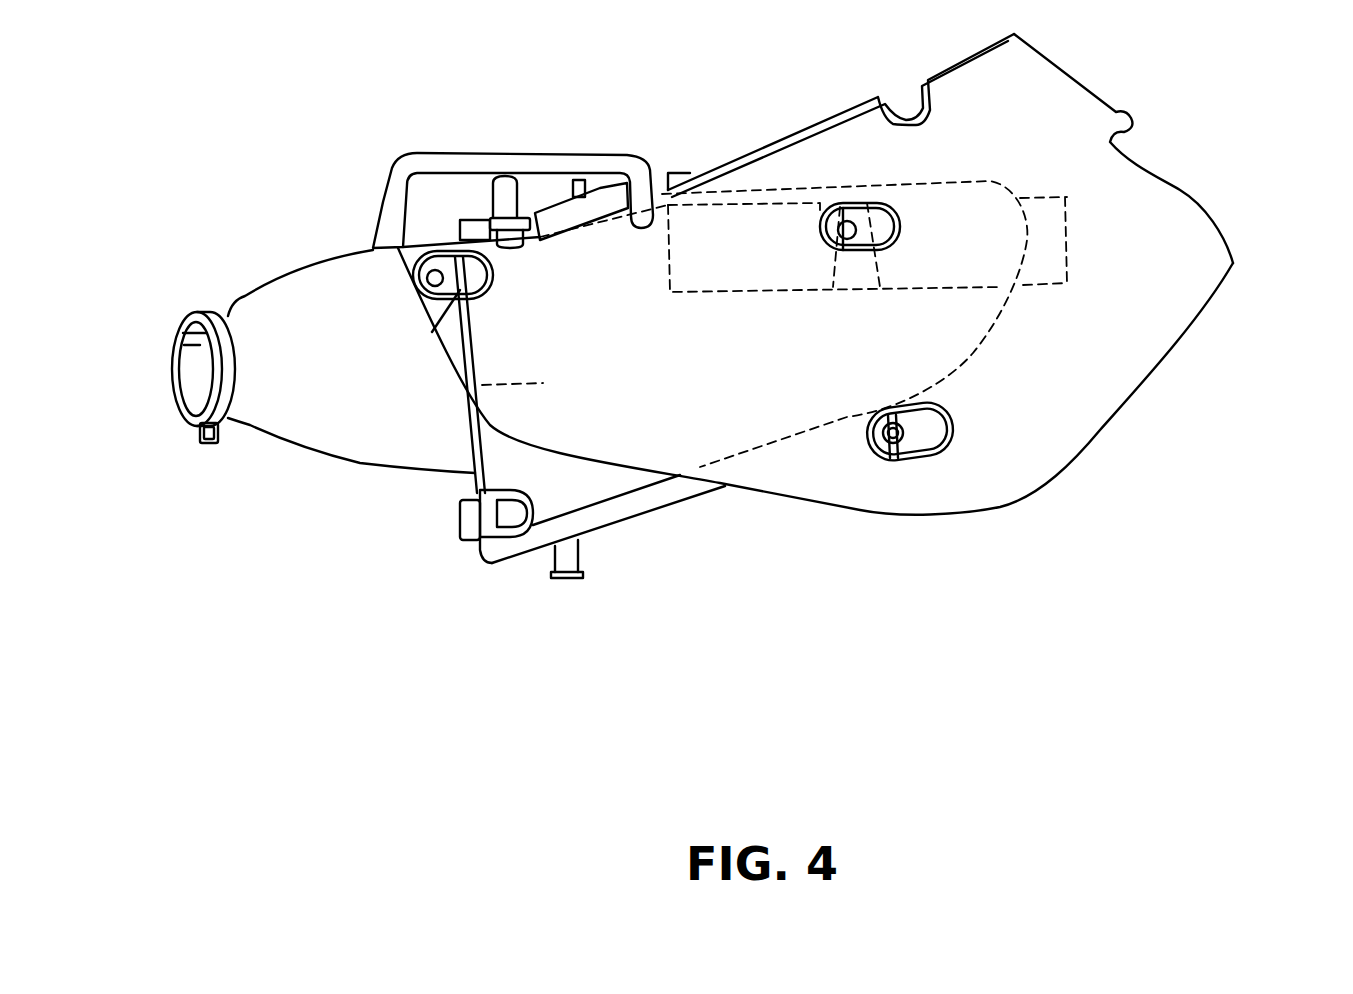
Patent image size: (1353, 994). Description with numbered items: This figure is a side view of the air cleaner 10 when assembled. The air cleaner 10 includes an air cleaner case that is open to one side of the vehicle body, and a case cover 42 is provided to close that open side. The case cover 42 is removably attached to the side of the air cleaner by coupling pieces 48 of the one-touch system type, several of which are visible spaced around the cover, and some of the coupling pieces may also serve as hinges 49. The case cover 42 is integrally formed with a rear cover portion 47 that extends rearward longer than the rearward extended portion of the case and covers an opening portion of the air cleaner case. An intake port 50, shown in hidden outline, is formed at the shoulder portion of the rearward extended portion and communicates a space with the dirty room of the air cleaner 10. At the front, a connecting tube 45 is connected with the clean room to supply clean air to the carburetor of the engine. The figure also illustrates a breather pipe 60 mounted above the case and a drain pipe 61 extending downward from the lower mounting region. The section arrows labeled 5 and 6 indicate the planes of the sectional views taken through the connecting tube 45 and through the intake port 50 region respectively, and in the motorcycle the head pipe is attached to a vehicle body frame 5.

The air cleaner 10 is at (262, 210).
The connecting tube 45 is at (318, 443).
The breather pipe 60 is at (430, 152).
The rear cover portion 47 is at (1133, 373).
The intake port 50 is at (983, 160).
The coupling pieces 48 is at (460, 289).
The case cover 42 is at (622, 477).
The hinges 49 is at (513, 522).
The drain pipe 61 is at (567, 570).
The vehicle body frame 5 is at (170, 367).
The section line 6 is at (653, 247).